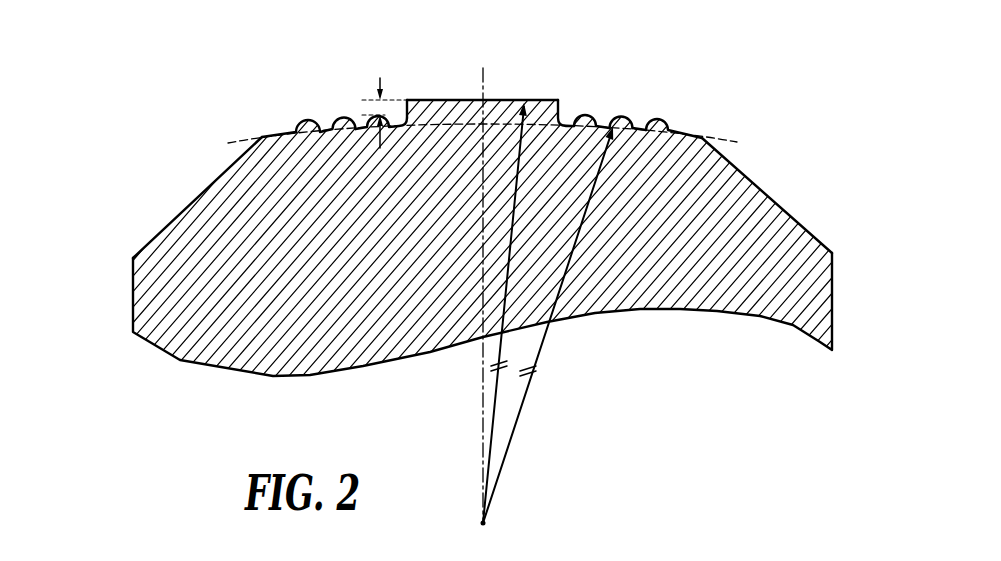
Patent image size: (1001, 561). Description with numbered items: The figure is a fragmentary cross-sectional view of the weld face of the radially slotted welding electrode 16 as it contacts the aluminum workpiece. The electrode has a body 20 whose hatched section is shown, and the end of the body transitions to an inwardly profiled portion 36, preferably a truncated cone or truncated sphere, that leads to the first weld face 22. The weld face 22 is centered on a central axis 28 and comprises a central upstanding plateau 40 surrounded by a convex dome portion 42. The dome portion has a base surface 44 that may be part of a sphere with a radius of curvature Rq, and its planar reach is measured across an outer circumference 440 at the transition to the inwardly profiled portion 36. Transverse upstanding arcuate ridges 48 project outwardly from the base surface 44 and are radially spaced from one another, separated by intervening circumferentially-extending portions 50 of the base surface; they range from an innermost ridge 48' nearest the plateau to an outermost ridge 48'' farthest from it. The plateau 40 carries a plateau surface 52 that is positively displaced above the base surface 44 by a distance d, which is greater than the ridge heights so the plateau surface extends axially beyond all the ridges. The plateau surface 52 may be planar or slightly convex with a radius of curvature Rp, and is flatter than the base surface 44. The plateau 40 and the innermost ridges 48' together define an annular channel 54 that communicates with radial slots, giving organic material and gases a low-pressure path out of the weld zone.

The radially slotted welding electrode 16 is at (152, 178).
The body 20 is at (157, 298).
The first weld face 22 is at (658, 42).
The central axis 28 is at (485, 445).
The inwardly profiled portion 36 is at (790, 212).
The central upstanding plateau 40 is at (437, 86).
The convex dome portion 42 is at (280, 92).
The base surface 44 is at (283, 132).
The outer circumference 440 is at (262, 137).
The transverse upstanding arcuate ridges 48 is at (326, 82).
The innermost ridge 48' is at (594, 83).
The outermost ridge 48'' is at (692, 104).
The intervening circumferentially-extending portions 50 is at (608, 123).
The plateau surface 52 is at (462, 100).
The annular channel 54 is at (567, 118).
The distance d is at (376, 108).
The radius of curvature of the plateau surface Rp is at (498, 392).
The radius of curvature of the base surface Rq is at (542, 340).